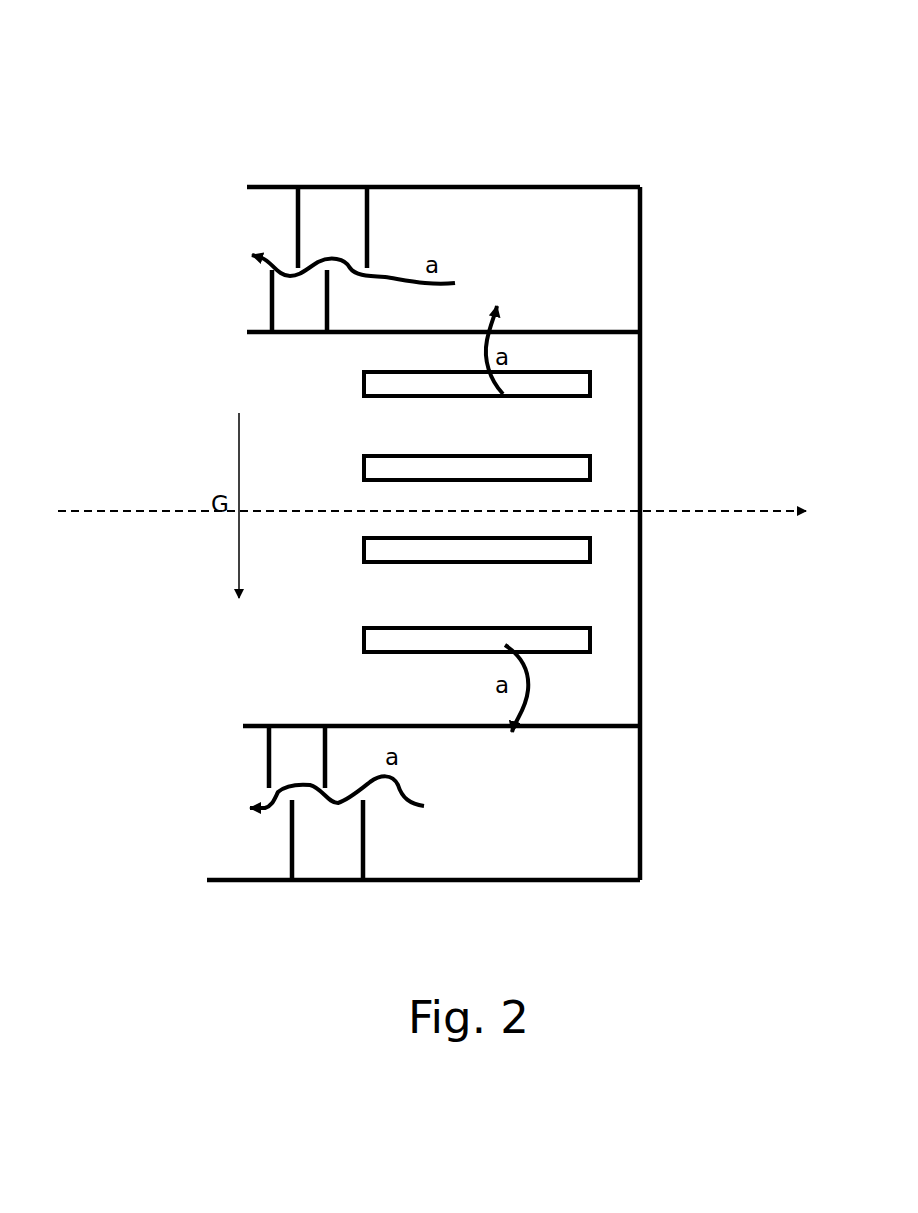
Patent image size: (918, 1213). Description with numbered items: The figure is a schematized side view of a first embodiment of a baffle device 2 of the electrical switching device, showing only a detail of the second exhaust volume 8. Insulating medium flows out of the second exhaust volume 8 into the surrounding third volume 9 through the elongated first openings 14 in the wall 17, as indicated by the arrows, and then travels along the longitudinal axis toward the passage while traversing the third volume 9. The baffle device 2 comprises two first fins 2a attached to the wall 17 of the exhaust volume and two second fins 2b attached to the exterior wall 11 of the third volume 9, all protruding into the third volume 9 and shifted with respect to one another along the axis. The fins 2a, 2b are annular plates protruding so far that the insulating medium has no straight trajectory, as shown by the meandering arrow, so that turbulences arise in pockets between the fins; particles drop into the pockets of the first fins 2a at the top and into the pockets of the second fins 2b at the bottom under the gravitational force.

The baffle device 2 is at (264, 205).
The first fin 2a is at (268, 312).
The second fin 2b is at (365, 228).
The third volume 9 is at (507, 218).
The exterior wall 11 is at (598, 187).
The second exhaust volume 8 is at (613, 480).
The elongated first openings 14 is at (583, 552).
The wall 17 is at (593, 730).